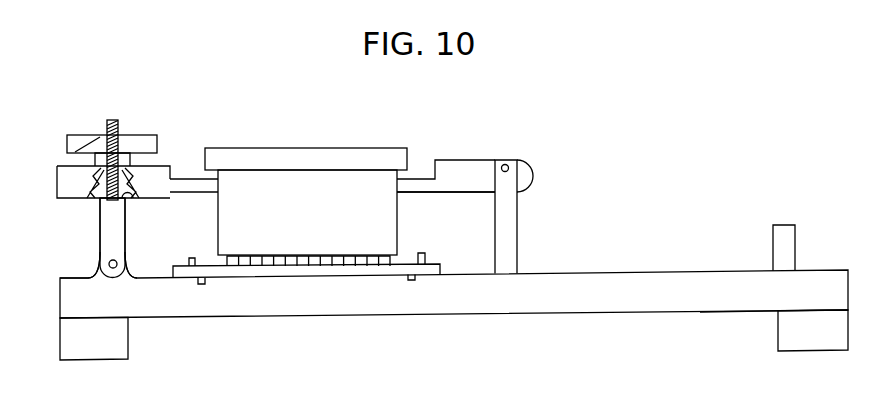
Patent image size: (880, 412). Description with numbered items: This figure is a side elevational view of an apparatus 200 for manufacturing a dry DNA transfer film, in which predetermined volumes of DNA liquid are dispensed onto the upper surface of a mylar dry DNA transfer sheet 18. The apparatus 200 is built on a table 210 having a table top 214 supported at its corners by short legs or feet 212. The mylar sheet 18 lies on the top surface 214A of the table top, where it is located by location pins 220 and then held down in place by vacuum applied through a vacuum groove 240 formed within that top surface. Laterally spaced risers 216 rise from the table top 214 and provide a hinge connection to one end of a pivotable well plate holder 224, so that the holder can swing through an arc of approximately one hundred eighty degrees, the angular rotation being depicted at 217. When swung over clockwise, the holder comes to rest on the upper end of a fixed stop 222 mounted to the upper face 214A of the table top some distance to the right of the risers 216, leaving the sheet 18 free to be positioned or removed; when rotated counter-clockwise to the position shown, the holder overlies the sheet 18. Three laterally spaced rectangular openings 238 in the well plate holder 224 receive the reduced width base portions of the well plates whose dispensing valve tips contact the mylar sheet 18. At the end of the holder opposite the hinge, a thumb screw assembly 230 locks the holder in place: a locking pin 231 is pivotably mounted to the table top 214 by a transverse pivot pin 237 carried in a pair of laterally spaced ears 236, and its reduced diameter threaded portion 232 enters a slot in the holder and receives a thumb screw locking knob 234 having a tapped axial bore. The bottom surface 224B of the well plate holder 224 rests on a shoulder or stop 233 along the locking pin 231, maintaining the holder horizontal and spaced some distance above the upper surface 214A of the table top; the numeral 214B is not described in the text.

The mylar dry DNA transfer sheet 18 is at (305, 275).
The apparatus 200 is at (545, 63).
The table 210 is at (581, 334).
The legs or feet 212 is at (113, 343).
The table top 214 is at (413, 307).
The top surface of the table top 214A is at (72, 277).
The second end of base plate 214B is at (645, 312).
The risers 216 is at (510, 217).
The depiction of angular rotation 217 is at (470, 153).
The location pins 220 is at (420, 254).
The fixed stop 222 is at (784, 233).
The well plate holder 224 is at (442, 155).
The bottom surface of the well plate holder 224B is at (465, 195).
The thumb screw assembly 230 is at (55, 129).
The locking pin 231 is at (104, 234).
The reduced diameter threaded portion 232 is at (113, 120).
The shoulder or stop 233 is at (135, 196).
The thumb screw locking knob 234 is at (127, 152).
The ears 236 is at (135, 263).
The pivot pin 237 is at (113, 270).
The openings 238 is at (210, 187).
The vacuum groove 240 is at (200, 289).